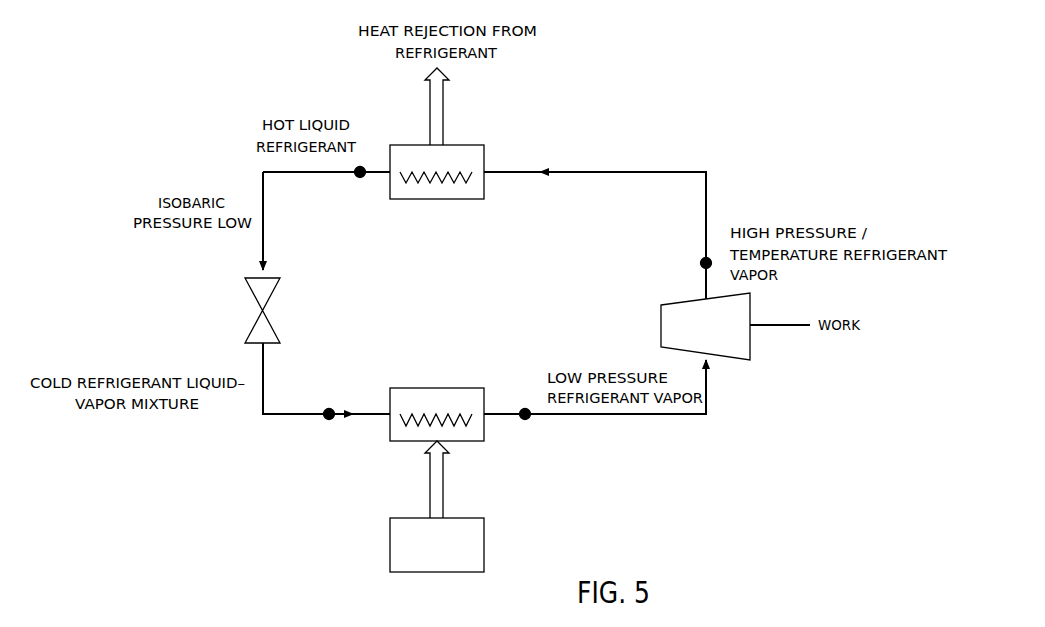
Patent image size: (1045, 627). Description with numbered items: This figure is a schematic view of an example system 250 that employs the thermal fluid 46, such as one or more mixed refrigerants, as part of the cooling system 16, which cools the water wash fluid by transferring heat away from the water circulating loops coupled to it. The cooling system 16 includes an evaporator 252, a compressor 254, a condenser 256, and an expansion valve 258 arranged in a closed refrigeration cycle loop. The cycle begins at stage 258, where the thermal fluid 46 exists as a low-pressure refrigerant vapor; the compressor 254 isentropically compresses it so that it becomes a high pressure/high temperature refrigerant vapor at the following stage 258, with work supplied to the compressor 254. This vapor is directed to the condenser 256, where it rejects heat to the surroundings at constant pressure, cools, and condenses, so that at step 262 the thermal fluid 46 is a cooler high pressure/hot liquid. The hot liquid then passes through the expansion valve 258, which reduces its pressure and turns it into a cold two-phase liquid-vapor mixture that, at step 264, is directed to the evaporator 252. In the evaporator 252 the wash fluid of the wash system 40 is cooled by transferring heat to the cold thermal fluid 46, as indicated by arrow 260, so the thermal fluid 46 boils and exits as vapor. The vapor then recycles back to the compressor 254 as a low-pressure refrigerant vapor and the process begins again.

The system 250 is at (172, 92).
The cooling system 16 is at (682, 110).
The condenser 256 is at (473, 145).
The step 262 is at (357, 178).
The thermal fluid 46 is at (706, 203).
The expansion valve 258 is at (701, 263).
The step 264 is at (327, 407).
The evaporator 252 is at (399, 441).
The arrow 260 is at (443, 490).
The wash system 40 is at (390, 545).
The compressor 254 is at (737, 360).